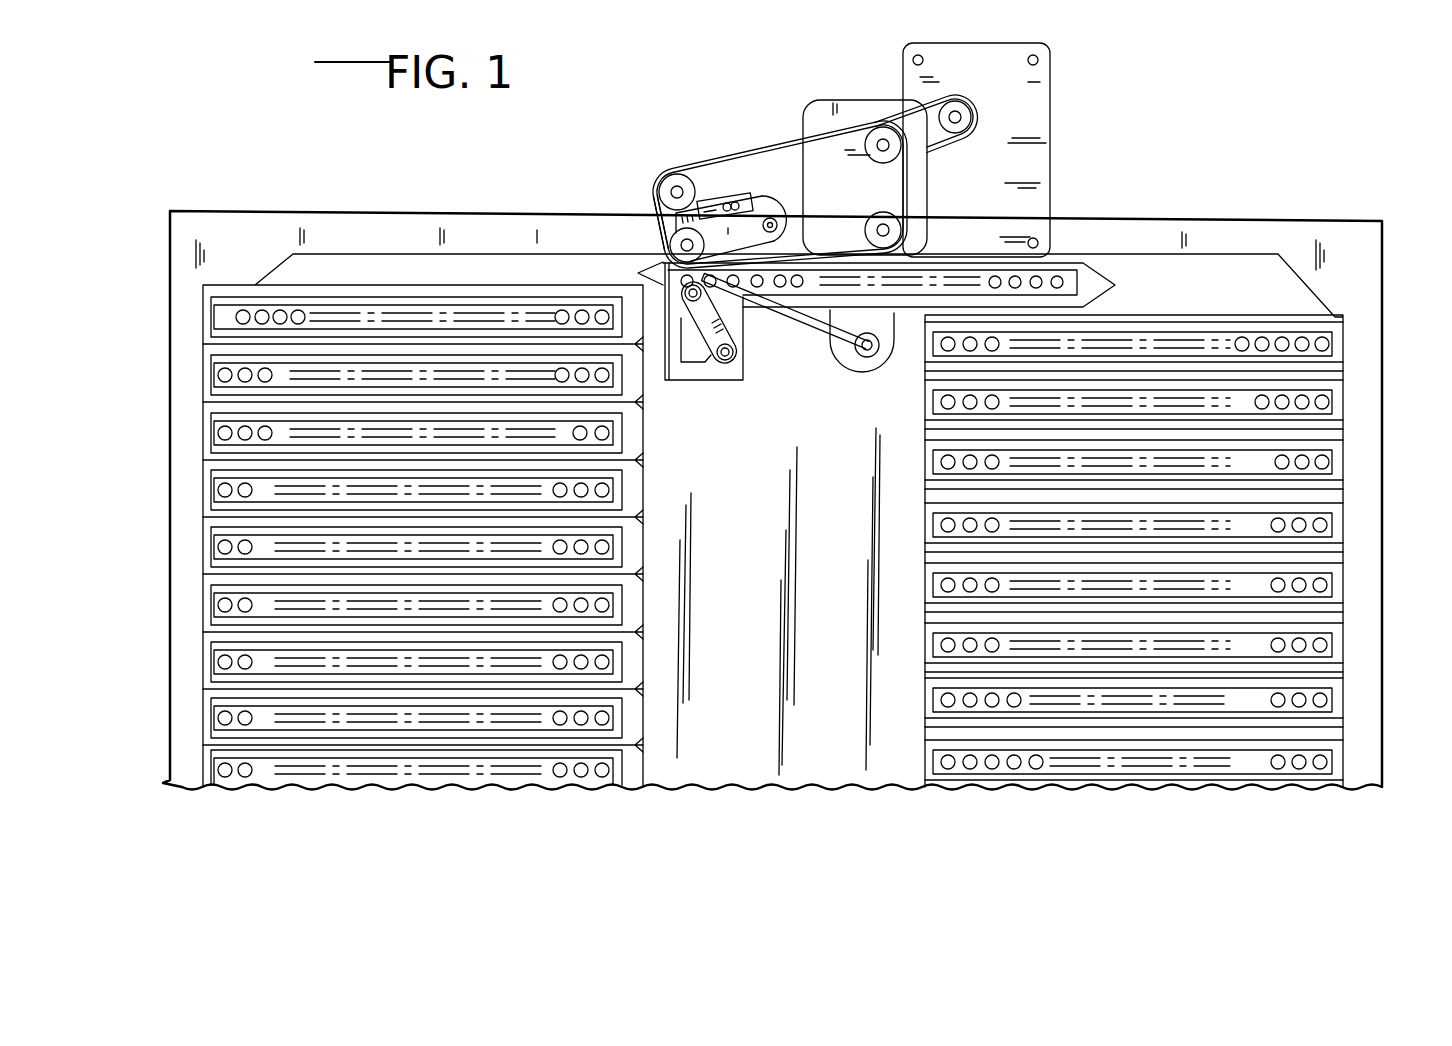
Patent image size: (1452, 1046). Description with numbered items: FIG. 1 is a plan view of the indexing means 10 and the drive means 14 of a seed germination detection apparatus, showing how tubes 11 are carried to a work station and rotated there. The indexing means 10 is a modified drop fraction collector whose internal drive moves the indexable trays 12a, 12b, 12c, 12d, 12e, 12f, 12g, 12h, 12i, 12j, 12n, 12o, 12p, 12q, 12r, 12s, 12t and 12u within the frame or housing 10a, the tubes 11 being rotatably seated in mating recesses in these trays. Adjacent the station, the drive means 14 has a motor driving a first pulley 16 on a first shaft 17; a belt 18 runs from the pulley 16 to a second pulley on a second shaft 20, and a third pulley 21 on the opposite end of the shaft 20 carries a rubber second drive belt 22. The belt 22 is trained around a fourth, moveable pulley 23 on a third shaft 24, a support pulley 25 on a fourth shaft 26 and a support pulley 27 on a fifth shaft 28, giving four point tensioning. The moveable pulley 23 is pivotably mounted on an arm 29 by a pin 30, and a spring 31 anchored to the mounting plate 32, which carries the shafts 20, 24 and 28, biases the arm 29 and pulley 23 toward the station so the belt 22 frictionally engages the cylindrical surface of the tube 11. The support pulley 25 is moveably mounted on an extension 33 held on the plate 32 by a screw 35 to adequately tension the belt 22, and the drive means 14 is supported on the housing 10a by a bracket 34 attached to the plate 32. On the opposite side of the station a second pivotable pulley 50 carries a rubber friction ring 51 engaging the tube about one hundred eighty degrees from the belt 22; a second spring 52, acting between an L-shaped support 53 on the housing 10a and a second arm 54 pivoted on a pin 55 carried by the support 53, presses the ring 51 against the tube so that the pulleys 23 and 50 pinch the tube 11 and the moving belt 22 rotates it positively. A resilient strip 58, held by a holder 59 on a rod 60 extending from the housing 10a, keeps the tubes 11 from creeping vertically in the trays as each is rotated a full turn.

The indexing means 10 is at (440, 193).
The frame/housing of indexing means 10a is at (237, 228).
The tube 11 is at (799, 279).
The indexable tray 12a is at (1083, 263).
The indexable tray 12b is at (212, 317).
The indexable tray 12c is at (212, 375).
The indexable tray 12d is at (212, 433).
The indexable tray 12e is at (212, 490).
The indexable tray 12f is at (212, 547).
The indexable tray 12g is at (212, 605).
The indexable tray 12h is at (212, 662).
The indexable tray 12i is at (212, 718).
The indexable tray 12j is at (212, 770).
The indexable tray 12n is at (1340, 762).
The indexable tray 12o is at (1340, 700).
The indexable tray 12p is at (1340, 645).
The indexable tray 12q is at (1340, 585).
The indexable tray 12r is at (1340, 525).
The indexable tray 12s is at (1340, 462).
The indexable tray 12t is at (1340, 402).
The indexable tray 12u is at (1340, 344).
The drive means 14 is at (1058, 110).
The first pulley 16 is at (958, 112).
The first shaft 17 is at (972, 118).
The belt 18 is at (938, 97).
The second shaft 20 is at (883, 138).
The third pulley 21 is at (870, 137).
The second drive belt 22 is at (758, 152).
The fourth moveable pulley 23 is at (659, 219).
The third shaft 24 is at (668, 242).
The support pulley 25 is at (677, 185).
The fourth shaft 26 is at (665, 181).
The support pulley 27 is at (891, 235).
The fifth shaft 28 is at (895, 226).
The arm 29 is at (742, 230).
The pin 30 is at (773, 220).
The spring 31 is at (787, 217).
The mounting plate 32 is at (884, 203).
The extension 33 is at (712, 210).
The bracket 34 is at (1052, 166).
The screw 35 is at (730, 202).
The second pivotable pulley 50 is at (706, 325).
The friction ring 51 is at (645, 273).
The second spring 52 is at (726, 382).
The L-shaped support 53 is at (675, 376).
The second arm 54 is at (740, 332).
The pivot pin 55 is at (742, 357).
The resilient strip 58 is at (782, 250).
The holder 59 is at (828, 355).
The rod 60 is at (882, 350).